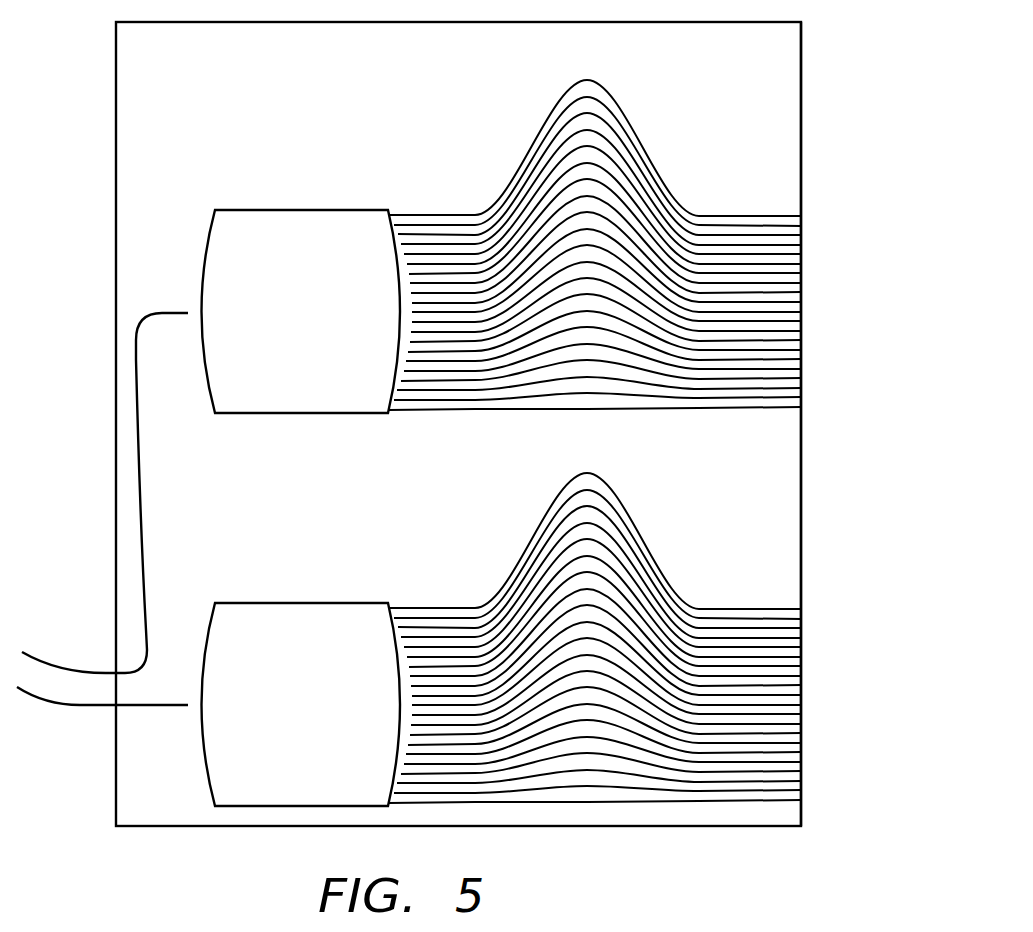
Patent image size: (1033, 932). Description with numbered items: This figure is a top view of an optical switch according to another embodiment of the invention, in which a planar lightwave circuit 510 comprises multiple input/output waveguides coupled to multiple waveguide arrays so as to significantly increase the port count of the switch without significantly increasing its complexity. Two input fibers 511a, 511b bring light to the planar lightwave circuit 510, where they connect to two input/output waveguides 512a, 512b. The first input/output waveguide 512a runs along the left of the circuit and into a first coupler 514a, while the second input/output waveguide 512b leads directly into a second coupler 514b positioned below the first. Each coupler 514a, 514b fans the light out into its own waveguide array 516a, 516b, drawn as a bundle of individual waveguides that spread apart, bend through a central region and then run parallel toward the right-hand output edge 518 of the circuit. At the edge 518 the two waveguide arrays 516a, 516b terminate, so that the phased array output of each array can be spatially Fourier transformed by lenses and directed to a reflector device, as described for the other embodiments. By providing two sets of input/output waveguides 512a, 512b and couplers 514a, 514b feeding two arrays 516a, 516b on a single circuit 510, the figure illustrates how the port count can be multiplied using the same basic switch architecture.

The optical device / substrate 510 is at (458, 424).
The first input optical fiber 511a is at (65, 660).
The second input optical fiber 511b is at (60, 706).
The first input waveguide 512a is at (150, 505).
The second input waveguide 512b is at (152, 706).
The first optical splitter 514a is at (305, 208).
The second optical splitter 514b is at (305, 601).
The first output waveguide array 516a is at (595, 220).
The second output waveguide array 516b is at (595, 612).
The output edge of device 518 is at (802, 100).